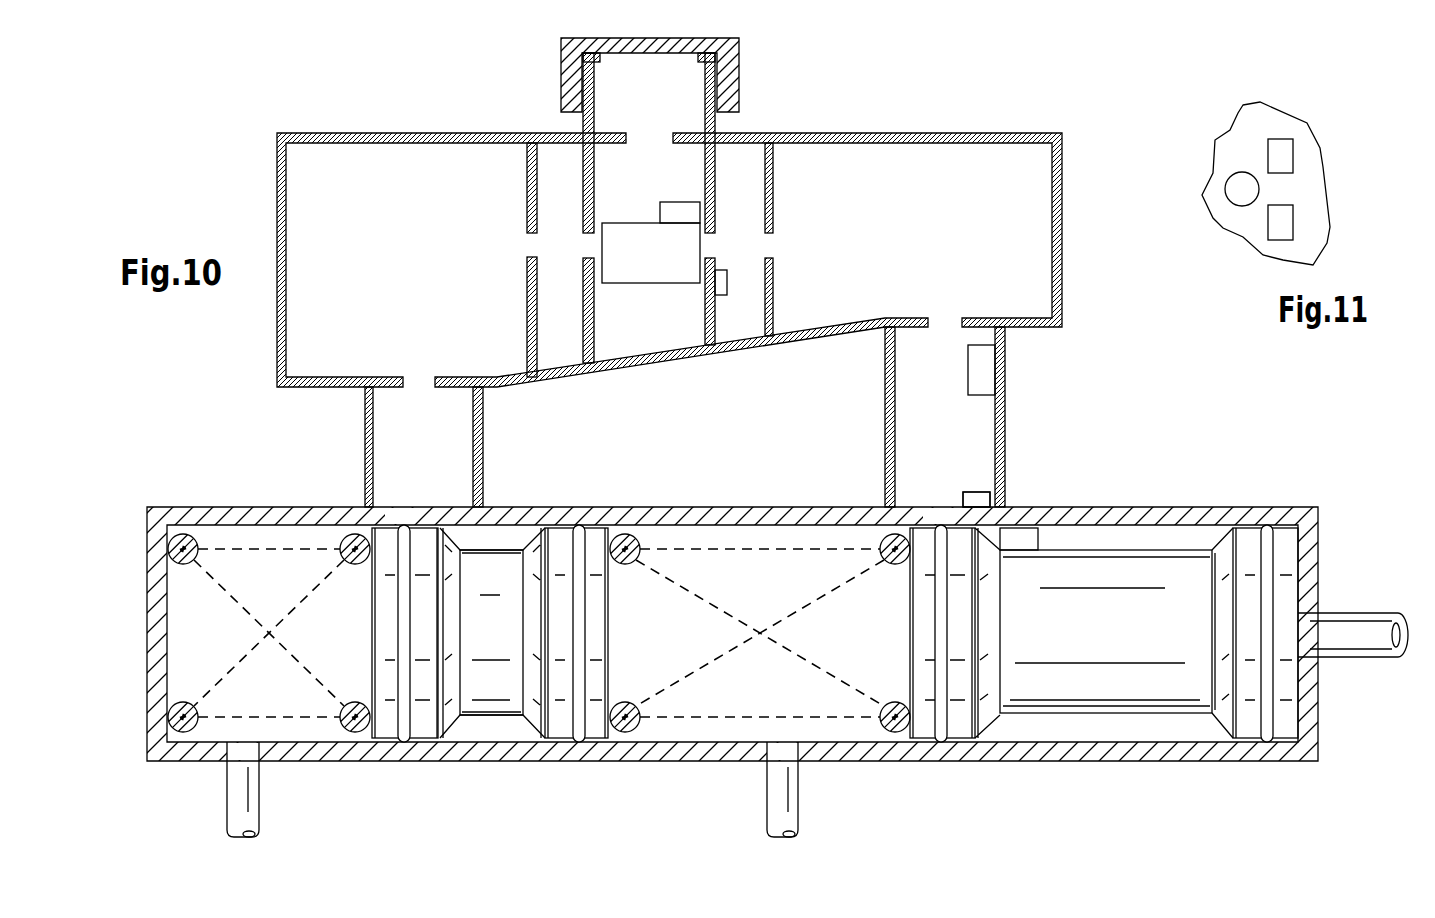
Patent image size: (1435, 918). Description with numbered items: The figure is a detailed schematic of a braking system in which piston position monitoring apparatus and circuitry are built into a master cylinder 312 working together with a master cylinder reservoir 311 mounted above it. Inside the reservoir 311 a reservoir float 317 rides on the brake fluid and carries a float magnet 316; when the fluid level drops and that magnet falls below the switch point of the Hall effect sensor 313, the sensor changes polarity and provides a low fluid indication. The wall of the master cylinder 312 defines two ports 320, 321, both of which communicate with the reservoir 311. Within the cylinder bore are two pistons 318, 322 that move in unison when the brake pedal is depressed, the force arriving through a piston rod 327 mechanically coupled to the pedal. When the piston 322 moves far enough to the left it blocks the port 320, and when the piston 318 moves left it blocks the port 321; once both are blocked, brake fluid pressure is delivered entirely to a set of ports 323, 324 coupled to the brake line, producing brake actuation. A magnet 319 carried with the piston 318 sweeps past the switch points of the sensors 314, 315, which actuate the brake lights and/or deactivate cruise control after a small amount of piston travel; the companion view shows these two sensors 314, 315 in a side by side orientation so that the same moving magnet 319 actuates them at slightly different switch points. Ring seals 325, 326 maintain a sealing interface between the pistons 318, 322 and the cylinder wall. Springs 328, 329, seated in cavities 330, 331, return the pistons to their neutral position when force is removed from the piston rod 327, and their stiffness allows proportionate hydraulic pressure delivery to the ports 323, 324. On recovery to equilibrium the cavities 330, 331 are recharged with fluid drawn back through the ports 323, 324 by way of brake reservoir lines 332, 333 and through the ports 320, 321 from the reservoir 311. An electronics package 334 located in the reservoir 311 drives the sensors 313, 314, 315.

In FIG. 10, the master cylinder reservoir 311 is at (367, 200).
In FIG. 10, the master cylinder 312 is at (273, 483).
In FIG. 10, the sensor 313 is at (723, 282).
In FIG. 10, the sensor 314 is at (980, 495).
In FIG. 11, the sensor 314 is at (1280, 223).
In FIG. 10, the sensor 315 is at (976, 499).
In FIG. 11, the sensor 315 is at (1280, 157).
In FIG. 10, the contact 316 is at (683, 210).
In FIG. 10, the reservoir float 317 is at (628, 252).
In FIG. 10, the piston 318 is at (1056, 616).
In FIG. 10, the magnet 319 is at (1021, 538).
In FIG. 10, the port 320 is at (407, 515).
In FIG. 10, the port 321 is at (938, 512).
In FIG. 11, the port 321 is at (1242, 190).
In FIG. 10, the piston 322 is at (451, 632).
In FIG. 10, the port 323 is at (244, 754).
In FIG. 10, the port 324 is at (785, 752).
In FIG. 10, the ring seal 325 is at (580, 560).
In FIG. 10, the ring seal 326 is at (1265, 715).
In FIG. 10, the piston rod 327 is at (1362, 625).
In FIG. 10, the spring 328 is at (190, 735).
In FIG. 10, the spring 329 is at (640, 732).
In FIG. 10, the cavity 330 is at (253, 572).
In FIG. 10, the cavity 331 is at (775, 575).
In FIG. 10, the brake reservoir line 332 is at (242, 800).
In FIG. 10, the brake reservoir line 333 is at (786, 806).
In FIG. 10, the electronics package 334 is at (983, 367).